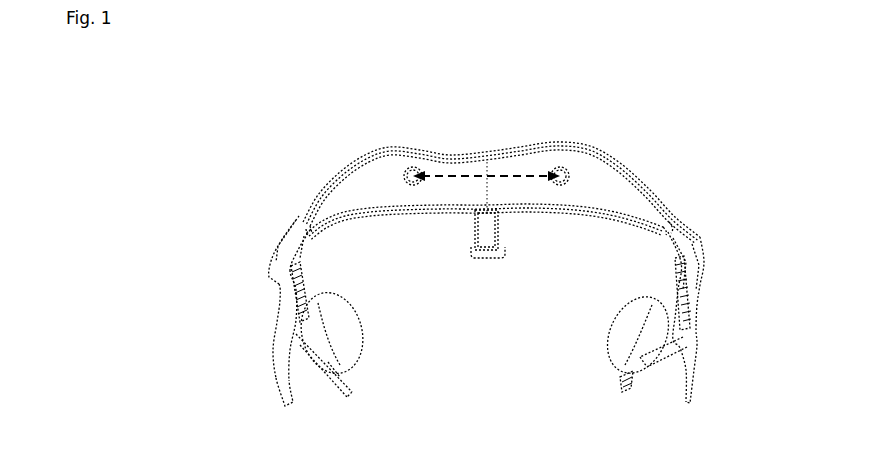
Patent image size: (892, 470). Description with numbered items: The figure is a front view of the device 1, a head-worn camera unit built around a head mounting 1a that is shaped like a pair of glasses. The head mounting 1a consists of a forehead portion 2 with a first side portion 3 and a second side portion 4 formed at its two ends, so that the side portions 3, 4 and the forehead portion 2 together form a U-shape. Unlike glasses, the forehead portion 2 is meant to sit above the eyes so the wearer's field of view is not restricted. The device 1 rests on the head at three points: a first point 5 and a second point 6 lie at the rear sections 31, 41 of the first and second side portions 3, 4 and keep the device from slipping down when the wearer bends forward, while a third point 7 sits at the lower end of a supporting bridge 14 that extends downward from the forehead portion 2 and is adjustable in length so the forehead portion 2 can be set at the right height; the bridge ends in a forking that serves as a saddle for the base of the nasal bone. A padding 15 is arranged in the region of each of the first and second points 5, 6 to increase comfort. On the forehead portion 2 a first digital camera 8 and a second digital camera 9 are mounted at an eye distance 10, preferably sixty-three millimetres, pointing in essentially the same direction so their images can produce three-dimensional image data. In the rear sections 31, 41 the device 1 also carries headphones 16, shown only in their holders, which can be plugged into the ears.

The device 1 is at (224, 148).
The head mounting 1a is at (314, 193).
The forehead portion 2 is at (614, 192).
The first side portion 3 is at (292, 237).
The rear section of the first side portion 31 is at (281, 298).
The headphones 16 is at (278, 373).
The second side portion 4 is at (688, 230).
The rear section of the second side portion 41 is at (684, 297).
The first point 5 is at (342, 328).
The second point 6 is at (628, 332).
The third point 7 is at (487, 260).
The first digital camera 8 is at (406, 169).
The second digital camera 9 is at (555, 169).
The eye distance 10 is at (471, 172).
The supporting bridge 14 is at (491, 229).
The padding 15 is at (632, 353).